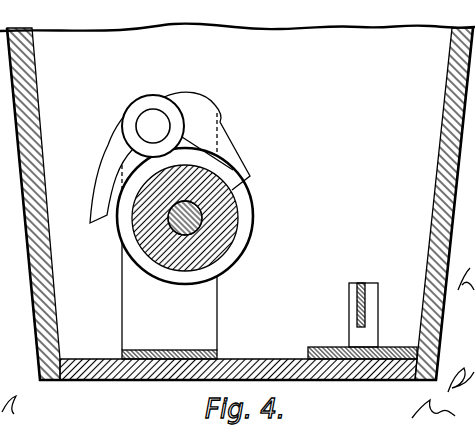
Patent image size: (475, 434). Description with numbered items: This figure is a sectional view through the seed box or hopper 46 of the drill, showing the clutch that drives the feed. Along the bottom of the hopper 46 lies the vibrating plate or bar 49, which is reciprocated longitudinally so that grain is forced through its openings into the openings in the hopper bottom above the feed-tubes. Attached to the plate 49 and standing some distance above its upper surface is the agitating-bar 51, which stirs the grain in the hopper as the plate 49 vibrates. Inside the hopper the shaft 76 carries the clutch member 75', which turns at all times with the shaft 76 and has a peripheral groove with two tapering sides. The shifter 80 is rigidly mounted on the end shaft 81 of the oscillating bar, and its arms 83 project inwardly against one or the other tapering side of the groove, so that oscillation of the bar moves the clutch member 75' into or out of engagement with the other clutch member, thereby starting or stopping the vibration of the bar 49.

The seedbox 46 is at (237, 202).
The vibrating plate or bar 49 is at (326, 348).
The agitating-bar 51 is at (361, 300).
The clutch member 75' is at (205, 216).
The shaft 76 is at (184, 220).
The shifter 80 is at (160, 107).
The end shaft 81 is at (154, 128).
The arms 83 is at (102, 158).